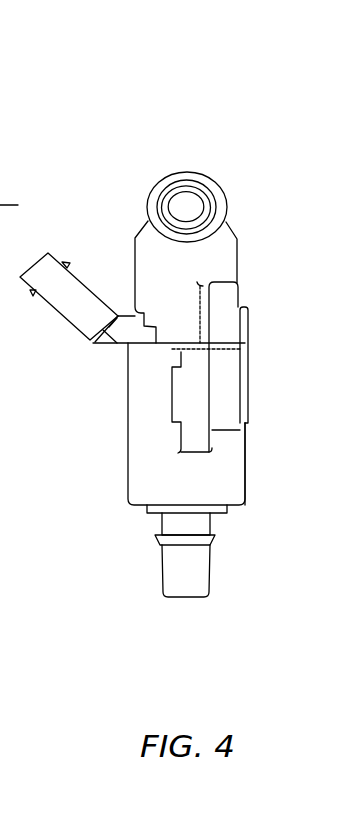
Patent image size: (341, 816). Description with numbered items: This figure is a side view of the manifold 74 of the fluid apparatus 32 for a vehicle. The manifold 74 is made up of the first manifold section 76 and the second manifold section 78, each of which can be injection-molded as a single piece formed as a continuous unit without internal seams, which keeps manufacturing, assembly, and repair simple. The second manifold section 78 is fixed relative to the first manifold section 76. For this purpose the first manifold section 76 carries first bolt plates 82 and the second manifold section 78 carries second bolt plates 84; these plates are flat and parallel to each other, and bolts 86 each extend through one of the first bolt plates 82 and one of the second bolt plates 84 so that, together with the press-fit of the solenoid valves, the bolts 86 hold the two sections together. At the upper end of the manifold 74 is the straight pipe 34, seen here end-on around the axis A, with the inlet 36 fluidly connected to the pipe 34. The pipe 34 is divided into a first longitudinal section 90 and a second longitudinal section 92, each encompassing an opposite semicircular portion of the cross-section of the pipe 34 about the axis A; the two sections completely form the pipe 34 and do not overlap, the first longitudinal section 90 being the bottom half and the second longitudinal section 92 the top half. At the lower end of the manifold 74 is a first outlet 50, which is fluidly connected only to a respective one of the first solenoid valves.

The fluid apparatus 32 is at (198, 95).
The straight pipe 34 is at (213, 185).
The inlet 36 is at (205, 211).
The first outlet 50 is at (210, 573).
The manifold 74 is at (252, 467).
The first manifold section 76 is at (134, 263).
The second manifold section 78 is at (128, 413).
The first bolt plates 82 is at (223, 292).
The second bolt plates 84 is at (192, 438).
The bolts 86 is at (248, 383).
The first longitudinal section 90 is at (213, 235).
The second longitudinal section 92 is at (168, 177).